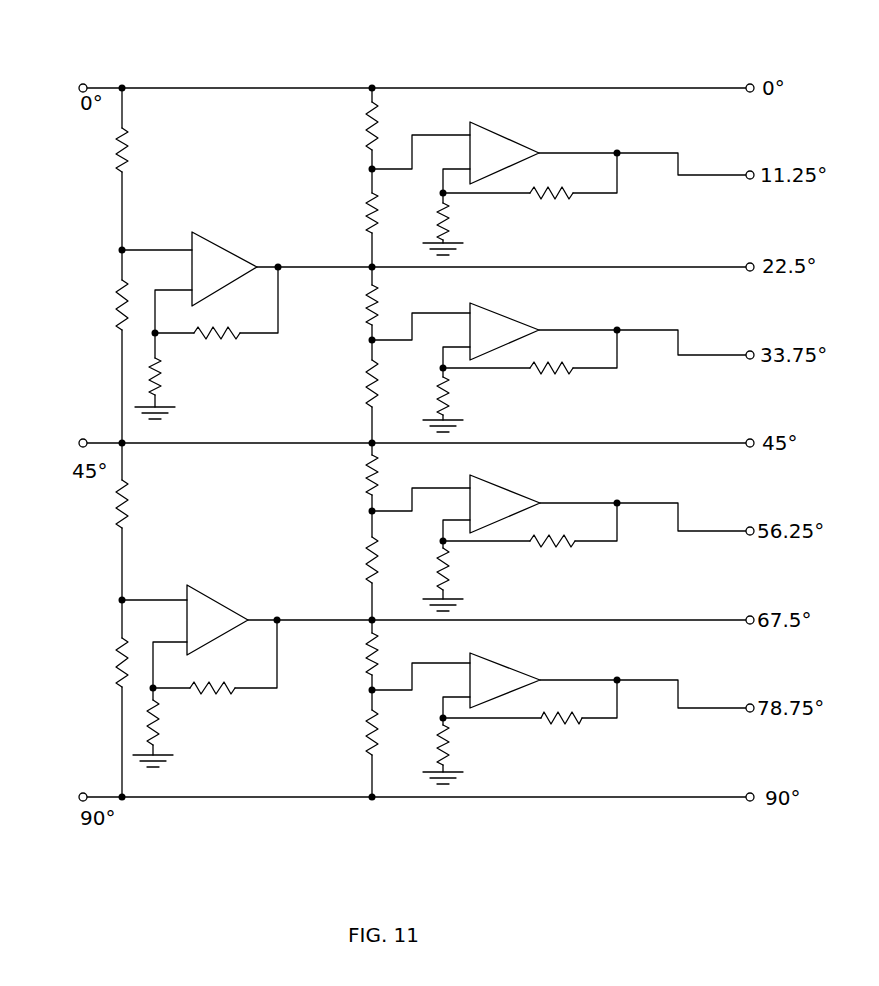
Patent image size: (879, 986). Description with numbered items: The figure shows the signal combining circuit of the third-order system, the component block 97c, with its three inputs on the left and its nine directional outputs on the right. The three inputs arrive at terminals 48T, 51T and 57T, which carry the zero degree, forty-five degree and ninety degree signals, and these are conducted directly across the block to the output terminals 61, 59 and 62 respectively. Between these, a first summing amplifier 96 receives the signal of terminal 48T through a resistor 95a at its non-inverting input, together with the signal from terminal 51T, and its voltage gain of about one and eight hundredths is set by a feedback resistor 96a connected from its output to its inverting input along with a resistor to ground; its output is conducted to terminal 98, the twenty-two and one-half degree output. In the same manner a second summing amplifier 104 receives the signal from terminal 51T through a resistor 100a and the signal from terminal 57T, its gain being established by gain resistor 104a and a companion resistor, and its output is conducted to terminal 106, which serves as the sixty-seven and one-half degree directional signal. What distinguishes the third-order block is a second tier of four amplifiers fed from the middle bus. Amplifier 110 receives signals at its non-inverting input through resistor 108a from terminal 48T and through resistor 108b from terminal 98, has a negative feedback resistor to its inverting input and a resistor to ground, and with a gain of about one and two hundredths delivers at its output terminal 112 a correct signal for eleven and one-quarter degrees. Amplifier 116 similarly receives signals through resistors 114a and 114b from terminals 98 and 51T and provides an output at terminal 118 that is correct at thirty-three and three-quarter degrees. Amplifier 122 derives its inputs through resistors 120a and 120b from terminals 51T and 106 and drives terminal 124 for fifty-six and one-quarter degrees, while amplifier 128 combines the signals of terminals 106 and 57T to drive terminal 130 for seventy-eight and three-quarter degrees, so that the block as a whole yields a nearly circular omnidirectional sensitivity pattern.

The component block 97c is at (358, 65).
The input terminal 48T is at (83, 83).
The input terminal 51T is at (83, 438).
The input terminal 57T is at (83, 792).
The output terminal 61 is at (750, 83).
The output terminal 98 is at (750, 262).
The output terminal 59 is at (750, 438).
The output terminal 106 is at (750, 615).
The output terminal 62 is at (750, 792).
The output terminal 112 is at (750, 170).
The output terminal 118 is at (750, 350).
The output terminal 124 is at (750, 526).
The output terminal 130 is at (750, 703).
The resistor 95a is at (128, 142).
The summing amplifier 96 is at (210, 237).
The feedback resistor 96a is at (221, 340).
The resistor 100a is at (128, 498).
The summing amplifier 104 is at (200, 590).
The gain resistor 104a is at (222, 698).
The resistor 108a is at (366, 116).
The resistor 108b is at (366, 200).
The amplifier 110 is at (508, 140).
The resistor 114a is at (368, 293).
The resistor 114b is at (367, 395).
The amplifier 116 is at (513, 318).
The resistor 120a is at (366, 477).
The resistor 120b is at (366, 560).
The amplifier 122 is at (517, 492).
The amplifier 128 is at (515, 670).